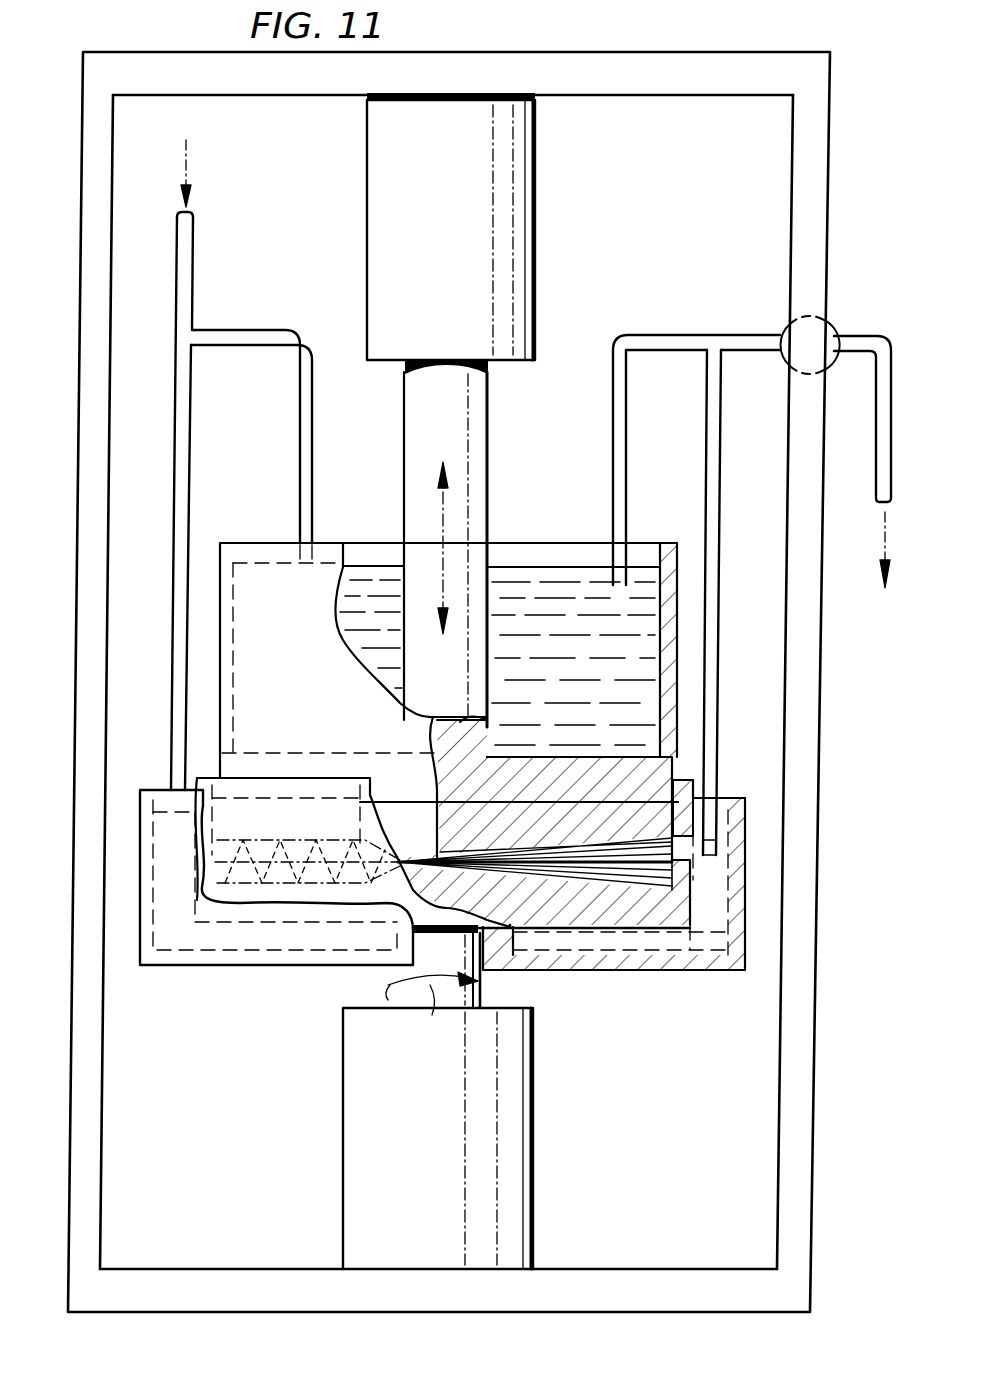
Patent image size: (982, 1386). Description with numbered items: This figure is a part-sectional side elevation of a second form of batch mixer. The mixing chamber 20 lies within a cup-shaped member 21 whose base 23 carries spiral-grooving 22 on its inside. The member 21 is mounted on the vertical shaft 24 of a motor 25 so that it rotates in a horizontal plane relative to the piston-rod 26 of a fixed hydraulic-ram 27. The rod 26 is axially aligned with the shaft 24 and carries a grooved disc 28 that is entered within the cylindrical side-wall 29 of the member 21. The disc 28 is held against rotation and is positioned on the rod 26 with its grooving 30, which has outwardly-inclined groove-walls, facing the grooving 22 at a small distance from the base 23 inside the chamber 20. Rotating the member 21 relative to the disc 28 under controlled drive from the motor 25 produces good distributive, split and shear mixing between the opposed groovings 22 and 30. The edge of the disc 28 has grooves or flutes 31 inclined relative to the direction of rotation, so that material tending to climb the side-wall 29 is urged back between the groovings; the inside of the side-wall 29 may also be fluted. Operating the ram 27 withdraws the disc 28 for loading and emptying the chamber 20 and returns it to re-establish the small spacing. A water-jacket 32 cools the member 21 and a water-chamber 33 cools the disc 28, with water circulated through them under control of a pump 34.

The mixing chamber 20 is at (675, 862).
The cup-shaped member 21 is at (255, 776).
The spiral-grooving 22 is at (648, 873).
The base 23 is at (622, 910).
The vertical shaft 24 is at (437, 987).
The motor 25 is at (385, 1138).
The piston-rod 26 is at (432, 428).
The hydraulic-ram 27 is at (410, 222).
The grooved disc 28 is at (543, 820).
The cylindrical side-wall 29 is at (747, 797).
The grooving 30 is at (627, 832).
The grooves or flutes 31 is at (440, 852).
The water-jacket 32 is at (707, 893).
The water-chamber 33 is at (551, 607).
The pump 34 is at (781, 330).